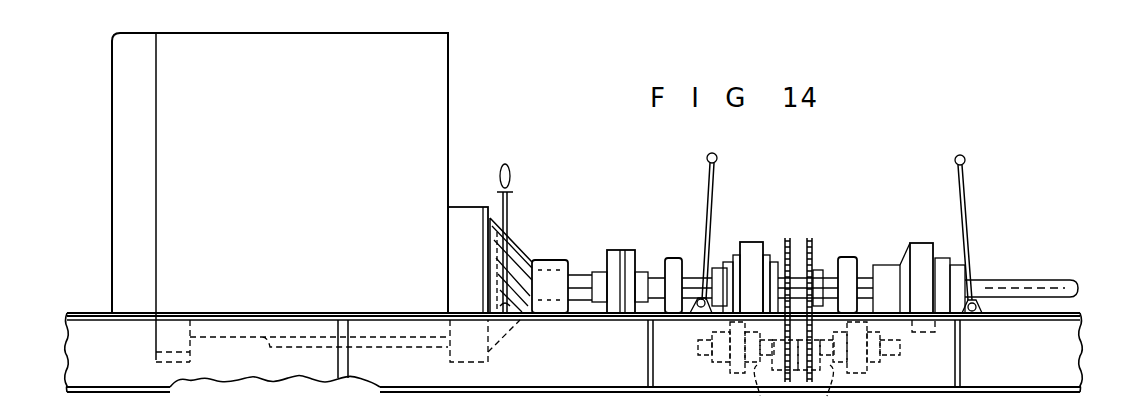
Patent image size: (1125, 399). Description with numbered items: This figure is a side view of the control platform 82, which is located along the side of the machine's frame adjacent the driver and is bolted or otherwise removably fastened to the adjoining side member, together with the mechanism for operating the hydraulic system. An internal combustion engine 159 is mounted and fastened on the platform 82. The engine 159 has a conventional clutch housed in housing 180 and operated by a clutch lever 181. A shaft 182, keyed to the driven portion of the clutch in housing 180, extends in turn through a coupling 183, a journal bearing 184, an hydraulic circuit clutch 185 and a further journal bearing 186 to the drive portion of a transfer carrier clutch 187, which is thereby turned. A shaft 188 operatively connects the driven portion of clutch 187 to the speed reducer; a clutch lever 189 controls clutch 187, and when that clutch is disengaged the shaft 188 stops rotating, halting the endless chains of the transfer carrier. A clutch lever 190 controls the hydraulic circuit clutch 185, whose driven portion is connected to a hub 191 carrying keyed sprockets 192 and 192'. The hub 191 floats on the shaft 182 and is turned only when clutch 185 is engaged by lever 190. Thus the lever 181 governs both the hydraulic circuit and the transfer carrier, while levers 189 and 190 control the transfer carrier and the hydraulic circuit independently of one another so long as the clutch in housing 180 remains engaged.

The control platform 82 is at (1068, 312).
The internal combustion engine 159 is at (298, 149).
The clutch housing 180 is at (468, 213).
The clutch lever 181 is at (508, 206).
The shaft 182 is at (578, 279).
The coupling 183 is at (622, 250).
The journal bearing 184 is at (672, 265).
The hydraulic circuit clutch 185 is at (750, 245).
The journal bearing 186 is at (848, 265).
The transfer carrier clutch 187 is at (925, 252).
The shaft 188 is at (1050, 285).
The clutch lever 189 is at (967, 181).
The clutch lever 190 is at (709, 177).
The hub 191 is at (799, 277).
The sprocket 192 is at (765, 286).
The sprocket 192' is at (827, 286).